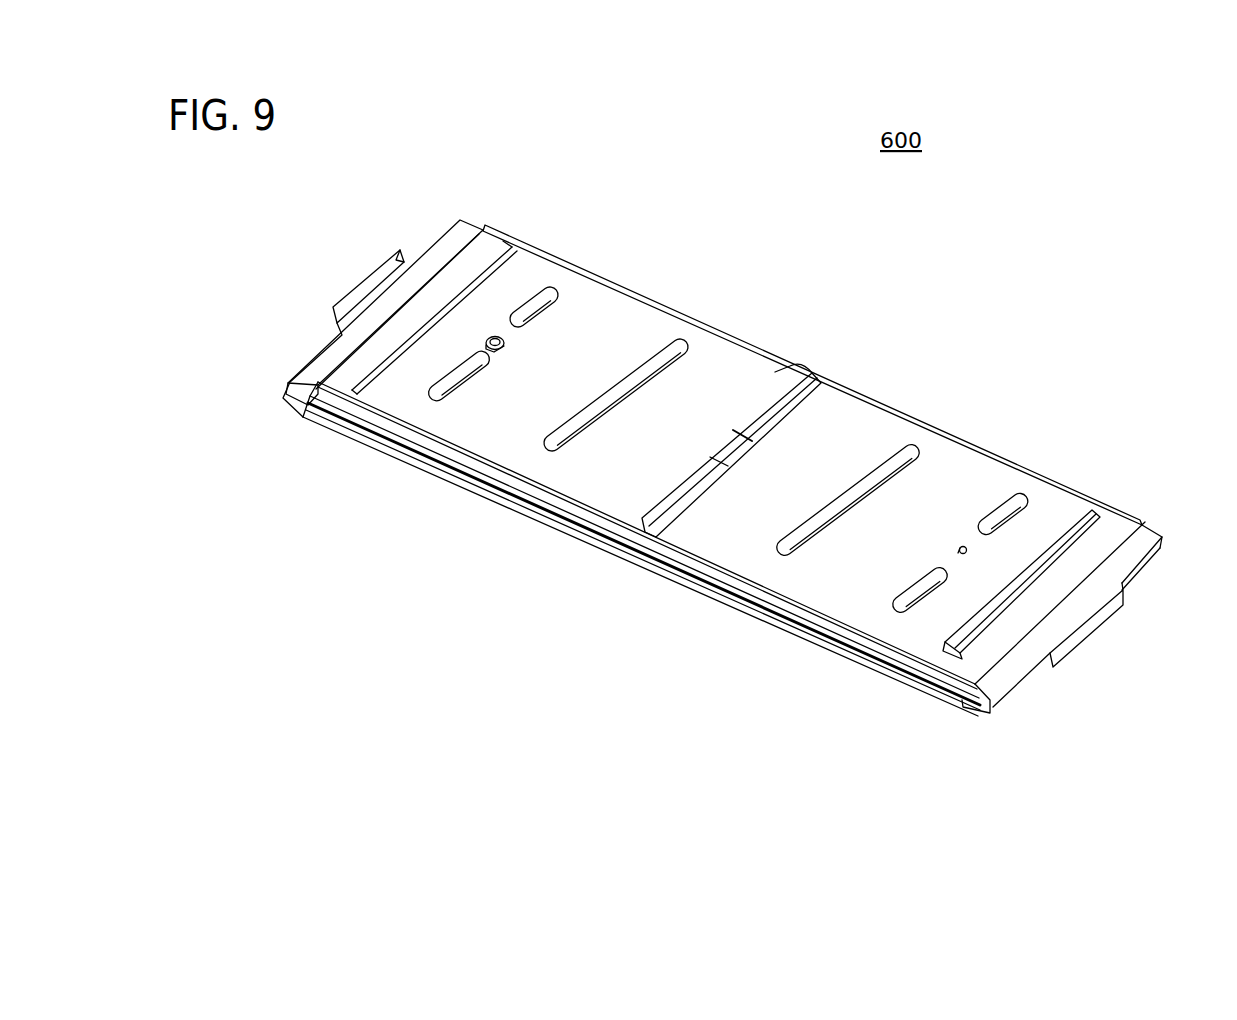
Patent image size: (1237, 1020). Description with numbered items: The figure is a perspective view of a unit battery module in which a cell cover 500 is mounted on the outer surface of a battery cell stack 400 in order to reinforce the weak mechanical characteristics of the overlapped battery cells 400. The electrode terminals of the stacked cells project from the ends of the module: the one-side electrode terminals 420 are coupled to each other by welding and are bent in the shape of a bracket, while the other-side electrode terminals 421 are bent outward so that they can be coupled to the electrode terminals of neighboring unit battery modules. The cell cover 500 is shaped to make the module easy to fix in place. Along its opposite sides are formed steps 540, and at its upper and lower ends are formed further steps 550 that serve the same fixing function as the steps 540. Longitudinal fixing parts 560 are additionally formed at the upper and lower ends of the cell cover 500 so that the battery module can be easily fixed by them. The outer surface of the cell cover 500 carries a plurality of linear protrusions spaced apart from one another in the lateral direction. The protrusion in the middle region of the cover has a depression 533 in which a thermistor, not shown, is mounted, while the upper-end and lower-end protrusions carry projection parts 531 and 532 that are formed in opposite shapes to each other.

The battery cell stack 400 is at (1160, 518).
The one-side electrode terminals 420 is at (1077, 640).
The other-side electrode terminals 421 is at (360, 283).
The cell cover 500 is at (523, 525).
The projection part 531 is at (496, 336).
The projection part 532 is at (963, 545).
The depression 533 is at (732, 443).
The steps 540 is at (703, 580).
The steps 550 is at (452, 240).
The longitudinal fixing parts 560 is at (493, 263).